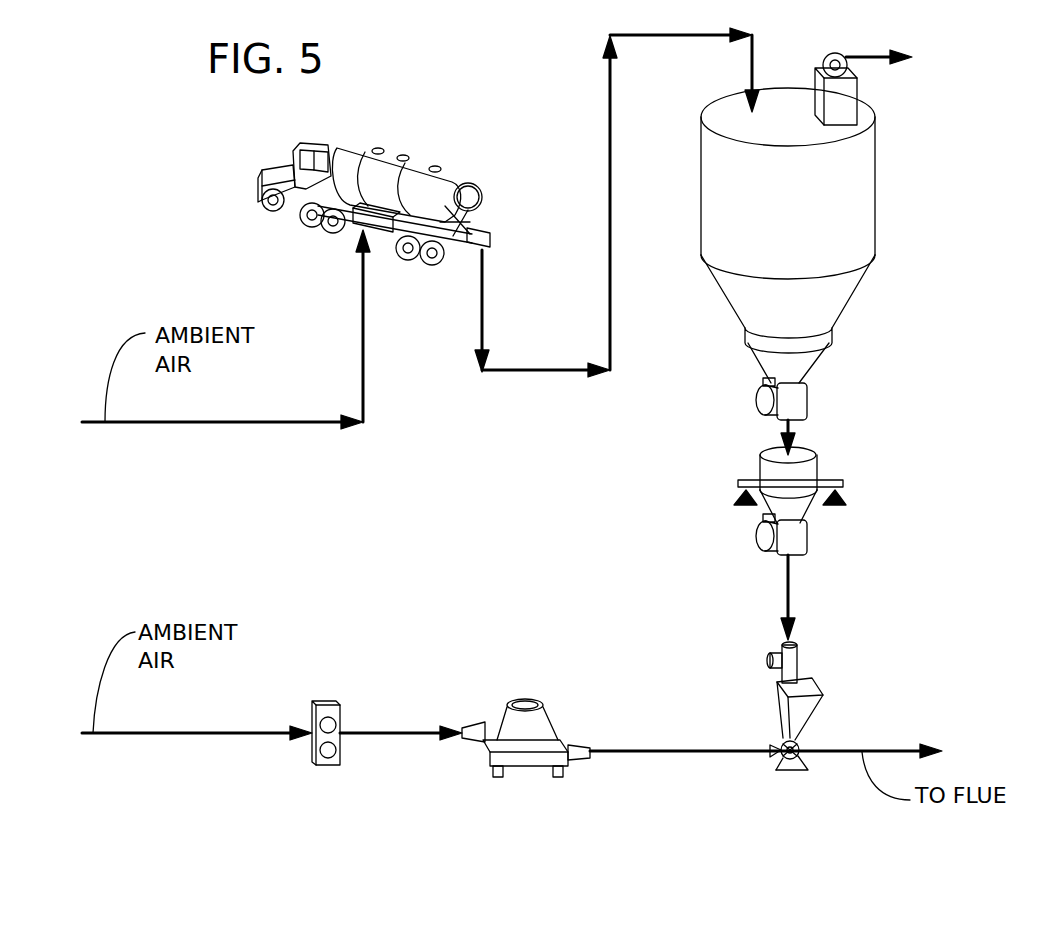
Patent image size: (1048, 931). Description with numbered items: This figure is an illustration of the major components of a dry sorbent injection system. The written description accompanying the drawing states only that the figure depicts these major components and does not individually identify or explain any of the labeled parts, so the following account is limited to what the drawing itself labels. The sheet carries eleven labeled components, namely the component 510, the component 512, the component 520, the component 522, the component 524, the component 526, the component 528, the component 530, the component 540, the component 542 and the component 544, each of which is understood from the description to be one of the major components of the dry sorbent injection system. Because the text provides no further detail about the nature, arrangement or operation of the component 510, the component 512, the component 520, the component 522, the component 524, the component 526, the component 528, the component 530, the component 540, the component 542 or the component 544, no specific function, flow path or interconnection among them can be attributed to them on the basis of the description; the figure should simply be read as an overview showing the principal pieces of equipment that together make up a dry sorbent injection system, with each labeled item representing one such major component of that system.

The tanker truck 510 is at (394, 148).
The ambient air conduit 512 is at (367, 308).
The storage silo 520 is at (825, 248).
The rotary valve 522 is at (805, 415).
The rotary valve 524 is at (805, 553).
The weigh hopper 526 is at (773, 480).
The eductor inlet 528 is at (800, 715).
The eductor 530 is at (795, 740).
The ambient air line 540 is at (228, 733).
The control valve 542 is at (323, 703).
The blower 544 is at (527, 703).